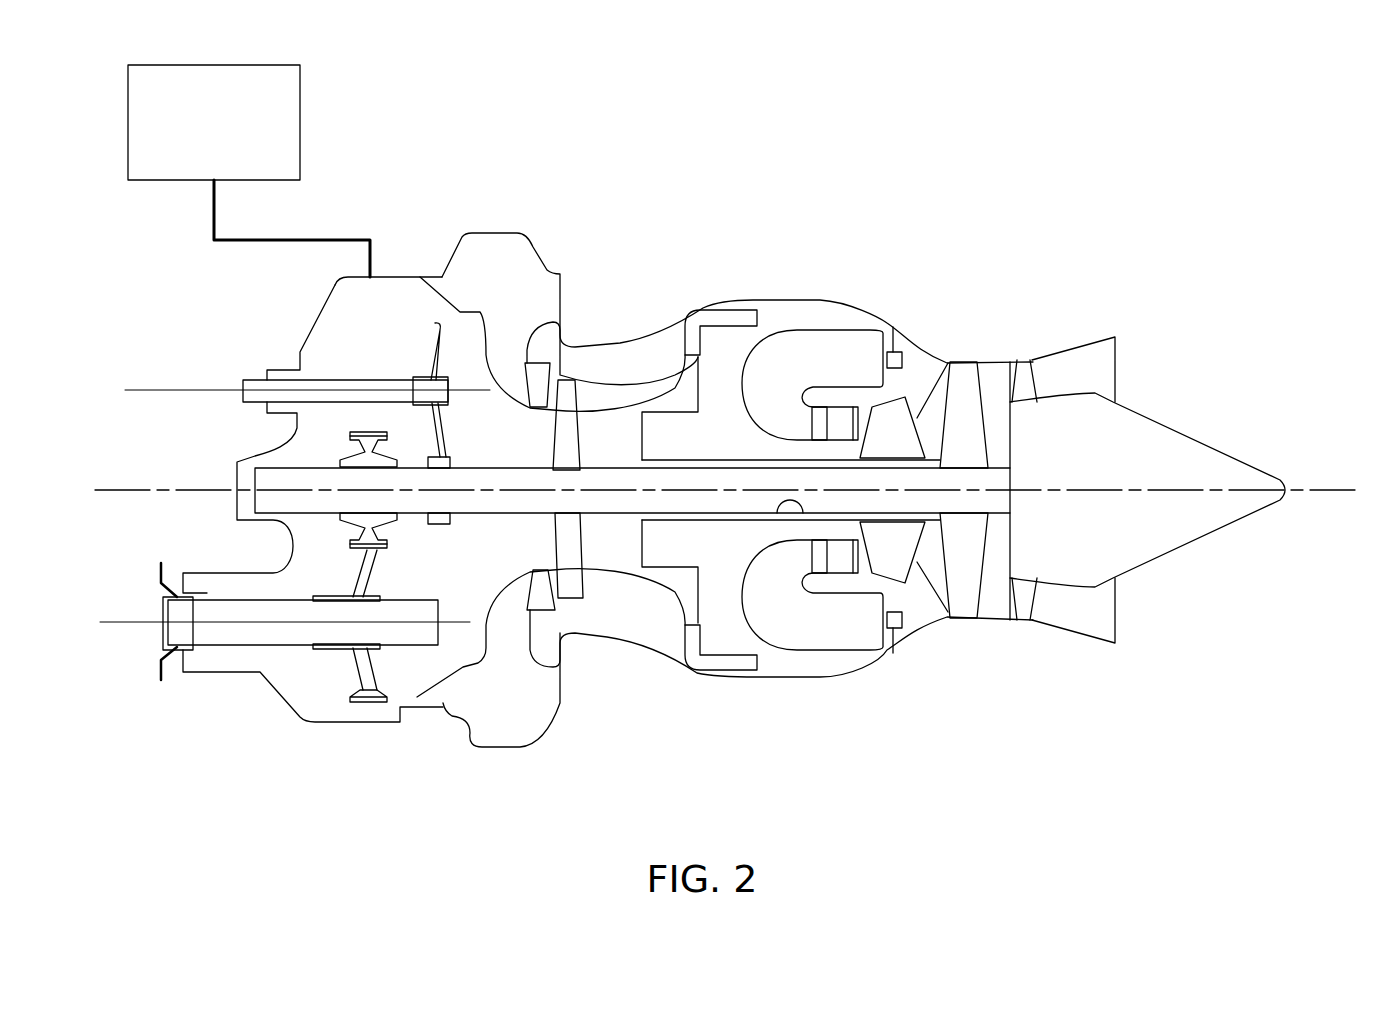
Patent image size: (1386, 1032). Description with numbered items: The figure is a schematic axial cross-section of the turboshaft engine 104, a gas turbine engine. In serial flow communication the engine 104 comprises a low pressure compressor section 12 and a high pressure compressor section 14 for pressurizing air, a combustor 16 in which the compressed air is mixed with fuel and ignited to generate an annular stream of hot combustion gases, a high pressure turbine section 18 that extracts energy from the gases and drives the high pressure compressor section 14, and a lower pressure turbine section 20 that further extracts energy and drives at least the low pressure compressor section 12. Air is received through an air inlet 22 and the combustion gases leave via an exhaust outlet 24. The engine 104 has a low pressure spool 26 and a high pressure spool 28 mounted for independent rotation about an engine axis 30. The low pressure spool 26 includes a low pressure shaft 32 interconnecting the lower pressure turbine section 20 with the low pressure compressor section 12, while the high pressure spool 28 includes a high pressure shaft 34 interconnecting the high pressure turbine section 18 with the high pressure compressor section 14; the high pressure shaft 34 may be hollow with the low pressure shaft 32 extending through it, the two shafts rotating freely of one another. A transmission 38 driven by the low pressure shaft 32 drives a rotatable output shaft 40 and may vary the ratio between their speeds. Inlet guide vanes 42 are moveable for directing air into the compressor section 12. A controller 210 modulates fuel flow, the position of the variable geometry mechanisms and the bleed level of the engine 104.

The low pressure compressor section 12 is at (545, 375).
The high pressure compressor section 14 is at (677, 430).
The combustor 16 is at (835, 365).
The high pressure turbine section 18 is at (885, 550).
The lower pressure turbine section 20 is at (963, 392).
The air inlet 22 is at (465, 740).
The exhaust outlet 24 is at (1097, 618).
The low pressure spool 26 is at (600, 516).
The high pressure spool 28 is at (722, 522).
The engine axis 30 is at (1353, 488).
The low pressure shaft 32 is at (495, 500).
The high pressure shaft 34 is at (798, 515).
The transmission 38 is at (312, 538).
The output shaft 40 is at (228, 630).
The inlet guide vanes 42 is at (545, 378).
The turboshaft engine 104 is at (1082, 254).
The controller 210 is at (187, 163).